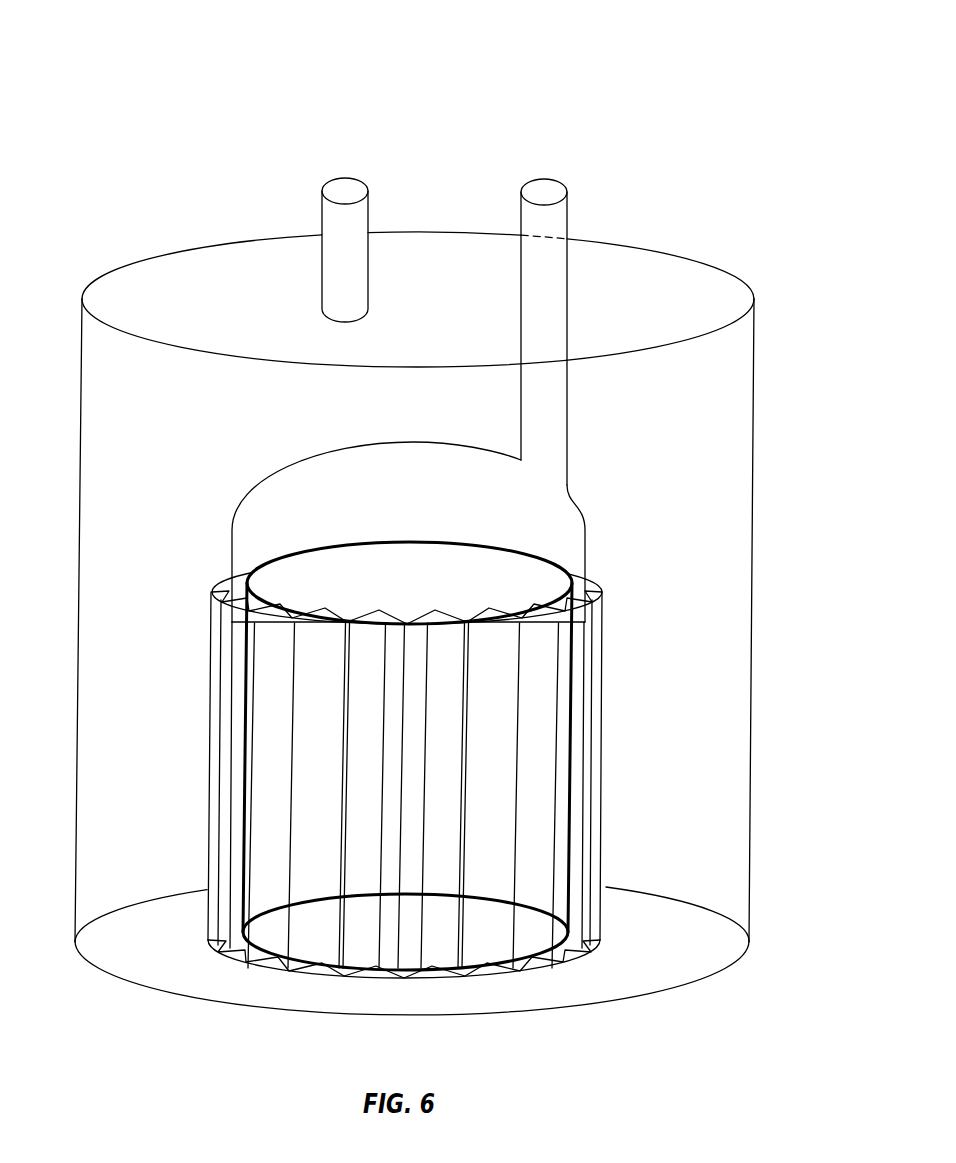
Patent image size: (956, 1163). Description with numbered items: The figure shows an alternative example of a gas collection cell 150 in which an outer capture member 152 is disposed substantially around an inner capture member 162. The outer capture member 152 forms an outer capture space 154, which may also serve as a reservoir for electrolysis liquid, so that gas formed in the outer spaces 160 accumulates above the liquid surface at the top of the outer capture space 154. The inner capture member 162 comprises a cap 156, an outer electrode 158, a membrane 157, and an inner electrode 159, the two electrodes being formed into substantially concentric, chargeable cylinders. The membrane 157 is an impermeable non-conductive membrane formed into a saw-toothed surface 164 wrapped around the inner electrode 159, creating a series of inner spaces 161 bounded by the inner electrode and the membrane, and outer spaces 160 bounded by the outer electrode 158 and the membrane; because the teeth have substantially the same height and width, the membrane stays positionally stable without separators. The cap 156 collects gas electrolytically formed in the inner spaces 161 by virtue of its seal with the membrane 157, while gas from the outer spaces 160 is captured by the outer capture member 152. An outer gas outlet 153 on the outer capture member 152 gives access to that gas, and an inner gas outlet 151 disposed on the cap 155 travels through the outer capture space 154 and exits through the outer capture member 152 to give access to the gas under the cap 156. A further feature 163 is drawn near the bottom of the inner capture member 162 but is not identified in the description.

The gas collection cell 150 is at (134, 70).
The inner gas outlet 151 is at (521, 296).
The outer capture member 152 is at (677, 256).
The outer gas outlet 153 is at (322, 296).
The outer capture space 154 is at (736, 366).
The cap 155 is at (284, 472).
The cap 156 is at (590, 540).
The membrane 157 is at (588, 750).
The outer electrode 158 is at (605, 652).
The inner electrode 159 is at (572, 708).
The outer spaces 160 is at (572, 960).
The inner spaces 161 is at (505, 972).
The inner capture member 162 is at (432, 595).
The bottom ring 163 is at (600, 950).
The saw-toothed surface 164 is at (590, 582).